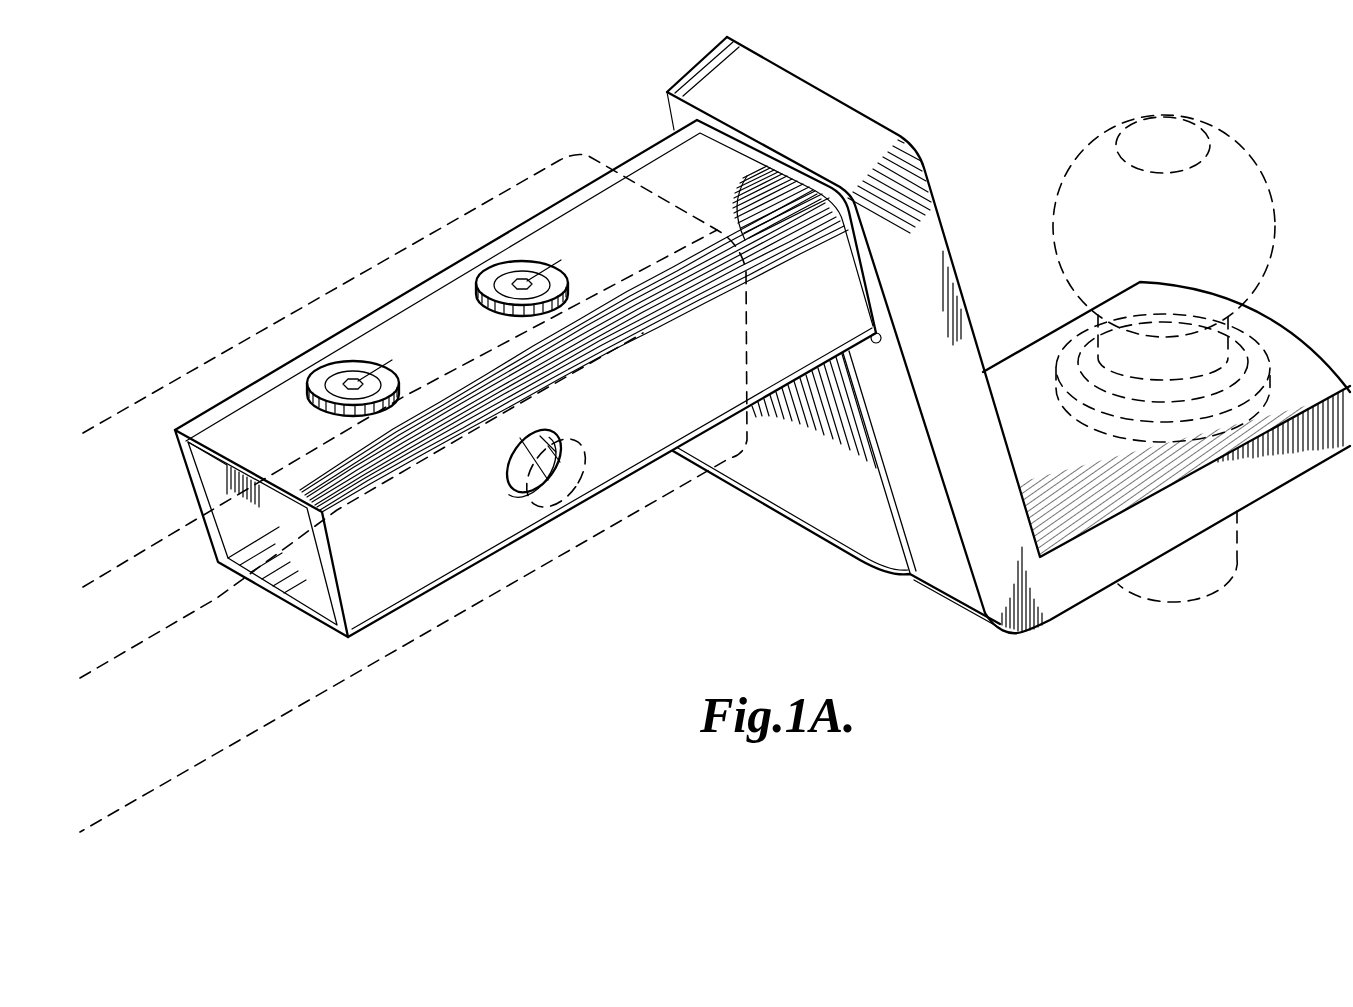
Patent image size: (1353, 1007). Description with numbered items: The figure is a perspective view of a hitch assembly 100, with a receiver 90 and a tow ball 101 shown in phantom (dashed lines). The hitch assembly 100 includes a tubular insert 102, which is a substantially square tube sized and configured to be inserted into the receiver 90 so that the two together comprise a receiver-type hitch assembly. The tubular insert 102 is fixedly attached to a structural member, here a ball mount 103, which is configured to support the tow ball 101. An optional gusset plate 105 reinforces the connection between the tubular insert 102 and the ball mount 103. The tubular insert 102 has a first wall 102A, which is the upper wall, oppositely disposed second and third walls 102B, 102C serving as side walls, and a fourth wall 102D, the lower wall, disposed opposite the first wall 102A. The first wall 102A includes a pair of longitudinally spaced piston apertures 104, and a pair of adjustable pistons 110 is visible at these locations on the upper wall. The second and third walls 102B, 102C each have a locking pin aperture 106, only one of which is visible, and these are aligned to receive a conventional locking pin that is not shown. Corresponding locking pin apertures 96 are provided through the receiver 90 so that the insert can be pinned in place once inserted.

The hitch assembly 100 is at (252, 134).
The receiver 90 is at (380, 258).
The locking pin apertures 96 is at (598, 488).
The tow ball 101 is at (1258, 160).
The tubular insert 102 is at (645, 149).
The first wall 102A is at (253, 460).
The second wall 102B is at (185, 488).
The third wall 102C is at (347, 567).
The fourth wall 102D is at (287, 605).
The ball mount 103 is at (950, 214).
The piston apertures 104 is at (306, 404).
The gusset plate 105 is at (833, 523).
The locking pin aperture 106 is at (514, 478).
The adjustable pistons 110 is at (353, 362).